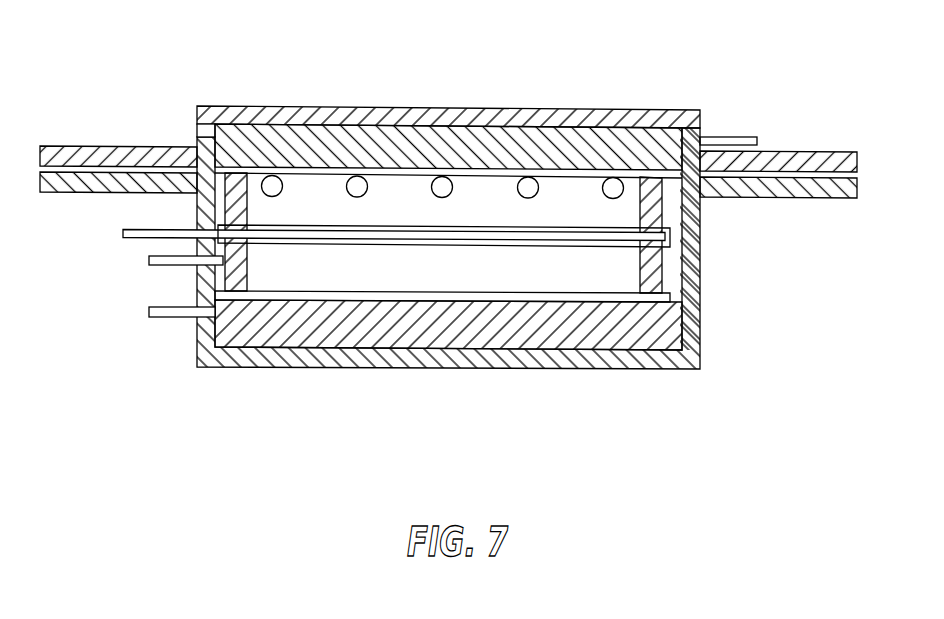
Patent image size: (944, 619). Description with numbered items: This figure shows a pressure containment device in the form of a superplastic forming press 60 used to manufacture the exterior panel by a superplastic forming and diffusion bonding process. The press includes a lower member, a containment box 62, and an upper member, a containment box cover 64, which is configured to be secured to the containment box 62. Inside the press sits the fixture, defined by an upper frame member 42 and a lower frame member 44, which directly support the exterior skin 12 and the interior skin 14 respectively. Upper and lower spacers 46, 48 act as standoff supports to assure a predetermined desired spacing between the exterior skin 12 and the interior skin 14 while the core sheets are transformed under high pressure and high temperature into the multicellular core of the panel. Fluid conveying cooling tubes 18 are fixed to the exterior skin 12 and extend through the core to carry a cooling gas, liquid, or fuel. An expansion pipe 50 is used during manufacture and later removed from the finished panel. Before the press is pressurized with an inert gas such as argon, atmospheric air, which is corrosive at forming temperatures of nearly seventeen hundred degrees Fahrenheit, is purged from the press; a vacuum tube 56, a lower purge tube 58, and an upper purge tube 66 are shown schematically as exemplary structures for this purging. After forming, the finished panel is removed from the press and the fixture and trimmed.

The exterior skin 12 is at (386, 178).
The interior skin 14 is at (280, 292).
The fluid conveying cooling tubes 18 is at (357, 176).
The upper frame member 42 is at (240, 127).
The lower frame member 44 is at (537, 338).
The upper spacer 46 is at (638, 213).
The lower spacer 48 is at (640, 272).
The expansion pipe 50 is at (178, 229).
The vacuum tube 56 is at (170, 317).
The lower purge tube 58 is at (197, 137).
The superplastic forming press 60 is at (704, 64).
The containment box 62 is at (700, 304).
The containment box cover 64 is at (477, 108).
The upper purge tube 66 is at (733, 136).